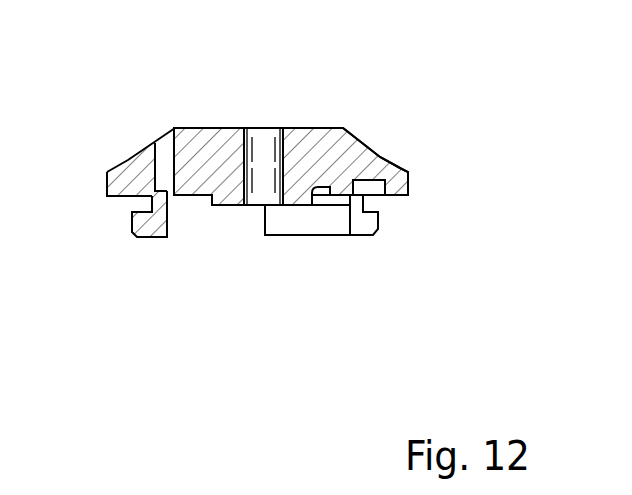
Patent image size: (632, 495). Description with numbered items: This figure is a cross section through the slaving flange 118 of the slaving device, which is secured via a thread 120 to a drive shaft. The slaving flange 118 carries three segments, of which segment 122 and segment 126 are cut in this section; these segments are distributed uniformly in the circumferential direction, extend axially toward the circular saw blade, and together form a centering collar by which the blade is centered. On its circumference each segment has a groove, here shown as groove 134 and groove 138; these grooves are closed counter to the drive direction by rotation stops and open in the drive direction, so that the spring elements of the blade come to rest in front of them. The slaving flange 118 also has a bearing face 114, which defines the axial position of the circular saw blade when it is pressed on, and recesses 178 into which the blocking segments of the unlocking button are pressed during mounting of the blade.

The bearing face 114 is at (395, 197).
The slaving flange 118 is at (313, 117).
The thread 120 is at (242, 150).
The segment 122 is at (280, 246).
The segment 126 is at (152, 246).
The groove 134 is at (370, 205).
The groove 138 is at (138, 210).
The recess 178 is at (362, 188).